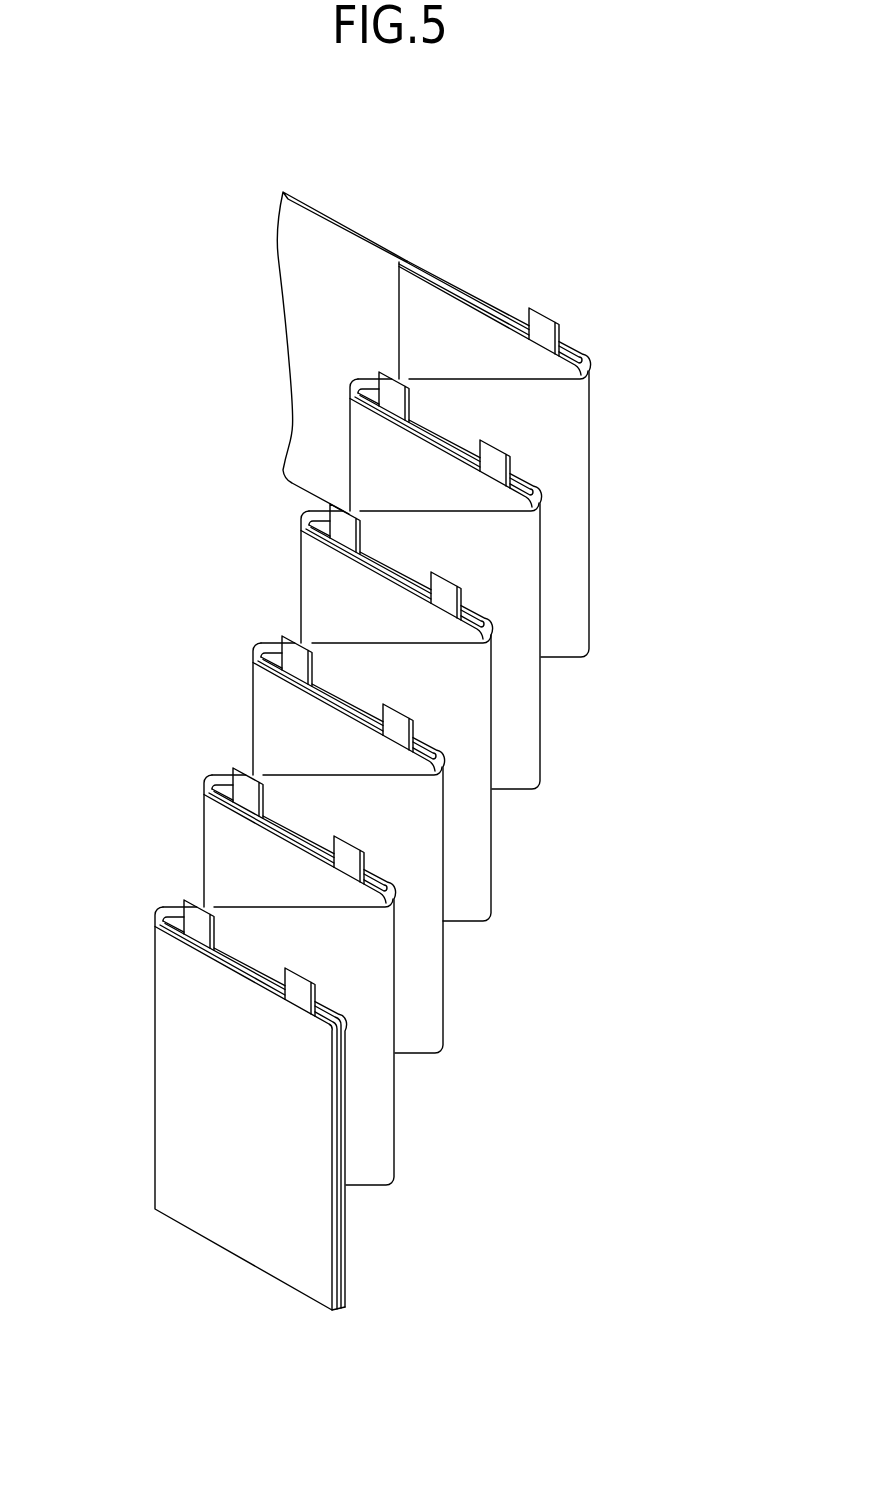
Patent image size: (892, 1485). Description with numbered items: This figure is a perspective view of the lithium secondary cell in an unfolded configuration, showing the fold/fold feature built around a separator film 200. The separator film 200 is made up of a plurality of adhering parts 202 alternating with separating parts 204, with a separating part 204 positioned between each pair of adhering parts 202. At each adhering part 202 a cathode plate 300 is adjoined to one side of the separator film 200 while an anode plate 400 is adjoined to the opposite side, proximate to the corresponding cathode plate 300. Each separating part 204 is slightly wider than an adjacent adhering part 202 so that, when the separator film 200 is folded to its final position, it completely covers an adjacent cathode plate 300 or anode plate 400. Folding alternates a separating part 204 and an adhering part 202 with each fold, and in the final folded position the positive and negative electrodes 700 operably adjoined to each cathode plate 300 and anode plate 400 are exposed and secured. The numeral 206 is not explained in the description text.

The separator film 200 is at (392, 723).
The adhering part 202 is at (243, 985).
The separating part 204 is at (301, 810).
The separator 206 is at (325, 214).
The cathode plate 300 is at (342, 1113).
The anode plate 400 is at (342, 1111).
The positive and negative electrodes 700 is at (547, 313).